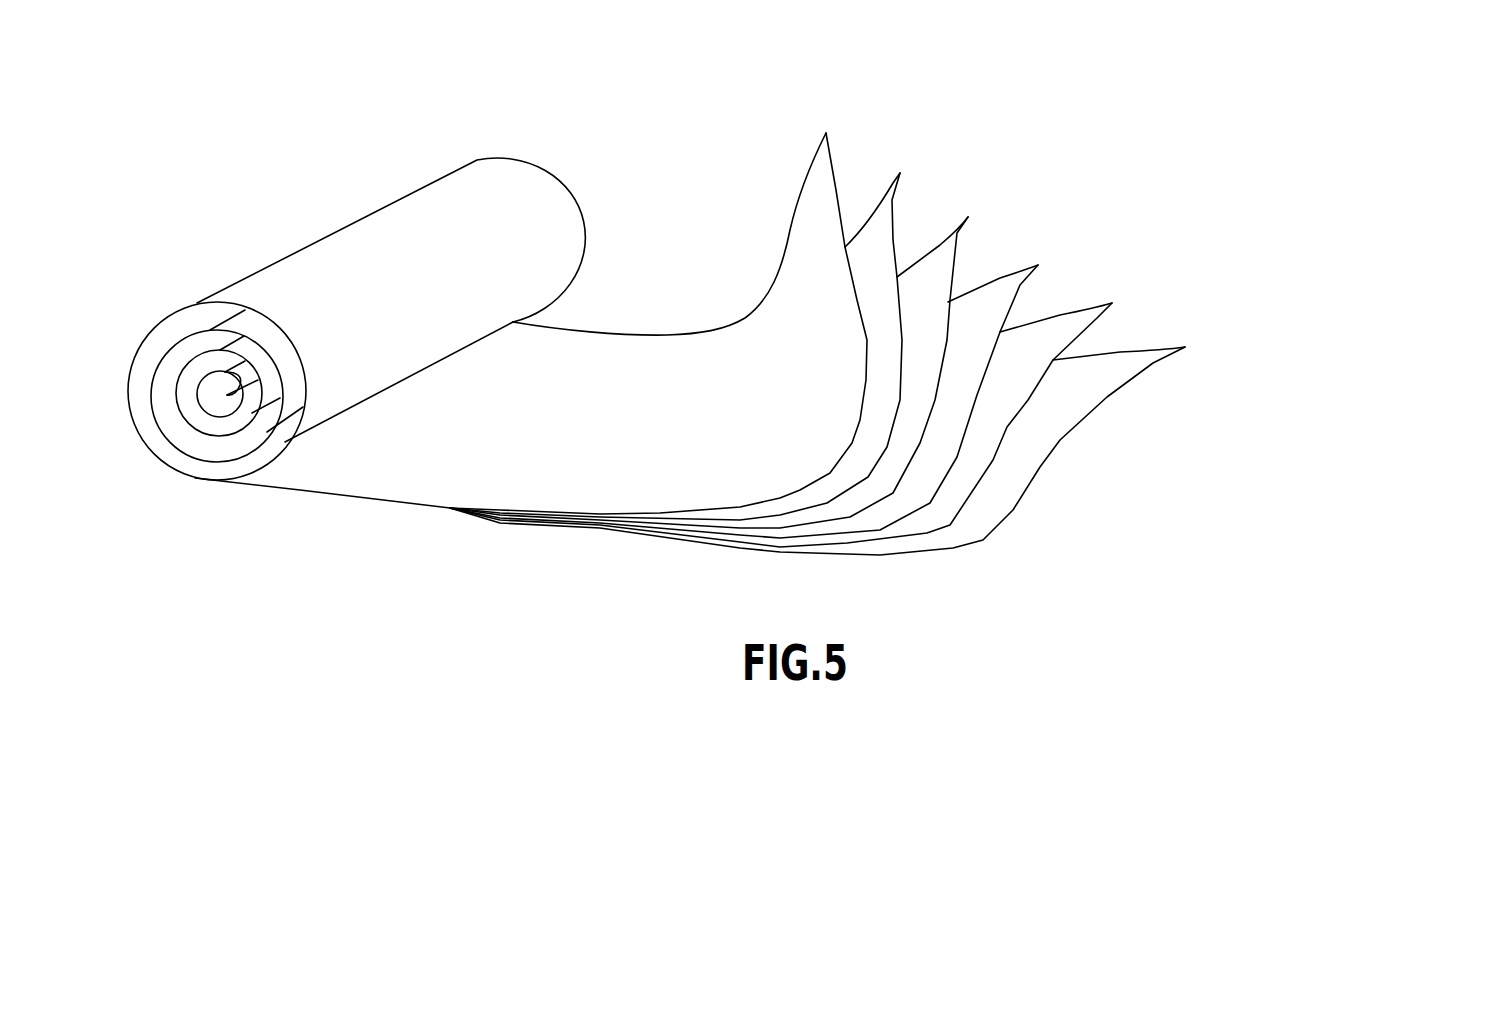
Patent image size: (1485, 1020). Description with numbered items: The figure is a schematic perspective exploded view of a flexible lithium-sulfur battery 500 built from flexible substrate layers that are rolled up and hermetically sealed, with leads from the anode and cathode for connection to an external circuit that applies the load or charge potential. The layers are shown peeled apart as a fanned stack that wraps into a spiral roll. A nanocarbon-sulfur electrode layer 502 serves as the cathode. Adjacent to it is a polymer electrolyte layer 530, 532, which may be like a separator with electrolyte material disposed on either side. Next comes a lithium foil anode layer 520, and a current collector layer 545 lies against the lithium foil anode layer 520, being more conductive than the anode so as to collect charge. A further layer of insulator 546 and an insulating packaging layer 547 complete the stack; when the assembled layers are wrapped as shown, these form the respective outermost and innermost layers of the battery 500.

The battery 500 is at (337, 103).
The packaging layer 547 is at (826, 133).
The nanocarbon-sulfur electrode layer 502 is at (900, 173).
The polymer electrolyte layer 530 is at (921, 360).
The polymer electrolyte layer 532 is at (968, 217).
The lithium foil anode layer 520 is at (1038, 265).
The current collector layer 545 is at (1112, 303).
The insulator 546 is at (1185, 347).